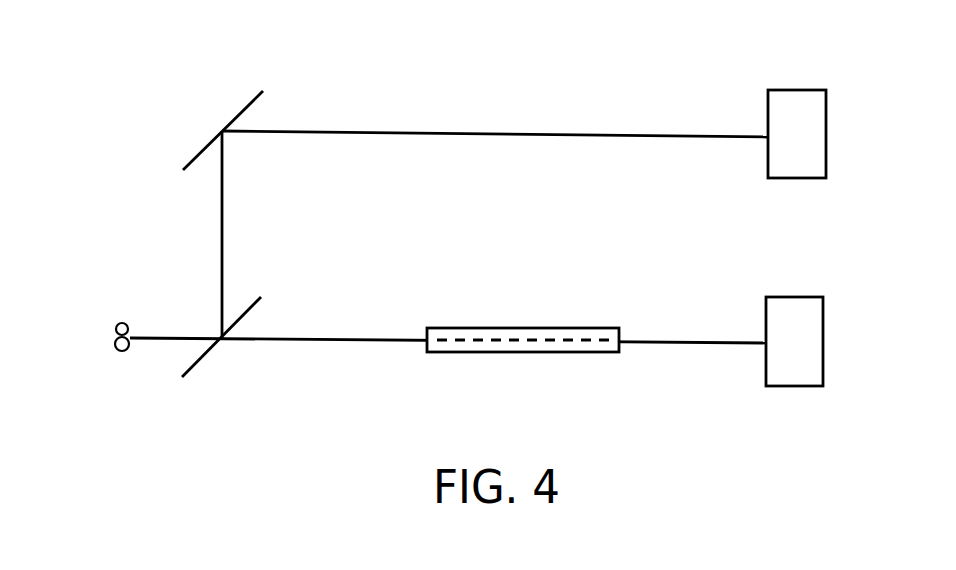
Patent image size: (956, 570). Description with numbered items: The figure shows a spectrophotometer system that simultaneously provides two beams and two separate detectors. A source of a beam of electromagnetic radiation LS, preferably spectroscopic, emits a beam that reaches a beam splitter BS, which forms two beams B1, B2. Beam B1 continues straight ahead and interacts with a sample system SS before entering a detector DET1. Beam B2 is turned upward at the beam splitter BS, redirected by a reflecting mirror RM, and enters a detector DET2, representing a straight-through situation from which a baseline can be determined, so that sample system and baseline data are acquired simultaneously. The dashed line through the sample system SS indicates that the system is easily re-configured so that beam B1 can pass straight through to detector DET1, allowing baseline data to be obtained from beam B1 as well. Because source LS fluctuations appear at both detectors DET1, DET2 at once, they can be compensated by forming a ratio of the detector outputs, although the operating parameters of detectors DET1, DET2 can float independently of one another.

The reflecting mirror RM is at (214, 121).
The beam splitter BS is at (222, 349).
The source of a beam of electromagnetic radiation LS is at (101, 340).
The beam B1 is at (370, 322).
The beam B2 is at (372, 117).
The sample system SS is at (523, 359).
The detector DET1 is at (796, 363).
The detector DET2 is at (799, 155).